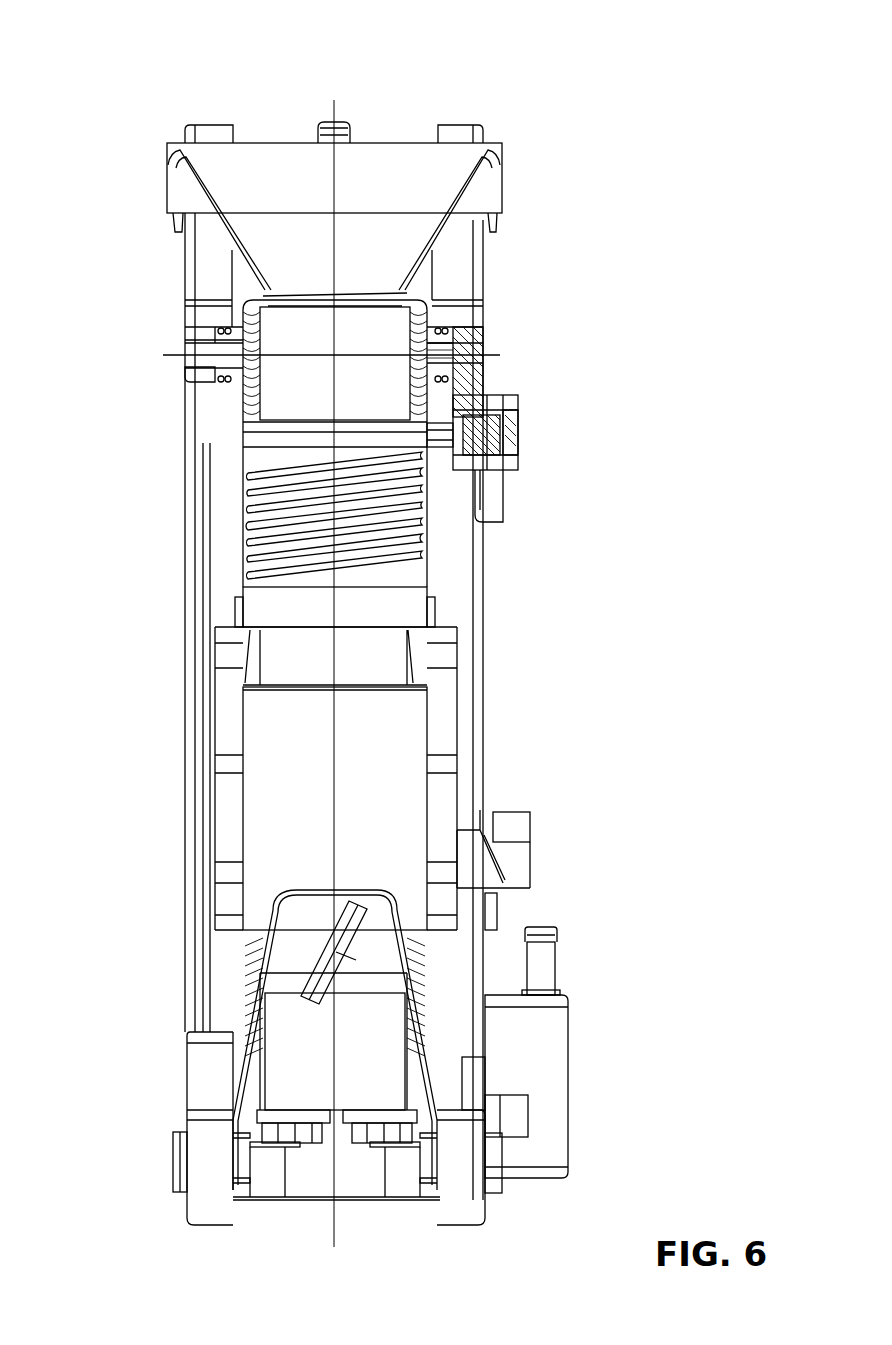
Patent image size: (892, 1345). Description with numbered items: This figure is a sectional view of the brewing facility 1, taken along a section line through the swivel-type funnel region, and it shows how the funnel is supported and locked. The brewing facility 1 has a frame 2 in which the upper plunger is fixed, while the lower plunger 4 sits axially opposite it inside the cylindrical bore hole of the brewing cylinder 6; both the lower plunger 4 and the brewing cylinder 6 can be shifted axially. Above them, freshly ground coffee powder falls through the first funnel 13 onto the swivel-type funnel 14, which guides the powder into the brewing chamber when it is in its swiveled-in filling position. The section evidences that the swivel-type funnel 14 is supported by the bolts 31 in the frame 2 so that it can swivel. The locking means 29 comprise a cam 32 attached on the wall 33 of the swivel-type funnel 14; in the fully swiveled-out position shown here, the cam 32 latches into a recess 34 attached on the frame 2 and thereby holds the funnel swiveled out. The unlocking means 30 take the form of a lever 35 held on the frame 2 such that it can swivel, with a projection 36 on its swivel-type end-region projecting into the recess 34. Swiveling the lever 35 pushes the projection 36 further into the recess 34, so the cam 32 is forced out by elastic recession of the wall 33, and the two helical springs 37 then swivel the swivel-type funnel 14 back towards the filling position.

The brewing facility 1 is at (158, 87).
The frame 2 is at (478, 593).
The lower plunger 4 is at (377, 1042).
The brewing cylinder 6 is at (380, 755).
The first funnel 13 is at (445, 173).
The swivel-type funnel 14 is at (427, 300).
The locking means 29 is at (437, 492).
The unlocking means 30 is at (547, 447).
The bolts 31 is at (187, 365).
The cam 32 is at (432, 450).
The wall 33 is at (485, 373).
The recess 34 is at (483, 475).
The lever 35 is at (508, 430).
The projection 36 is at (508, 442).
The helical springs 37 is at (227, 320).